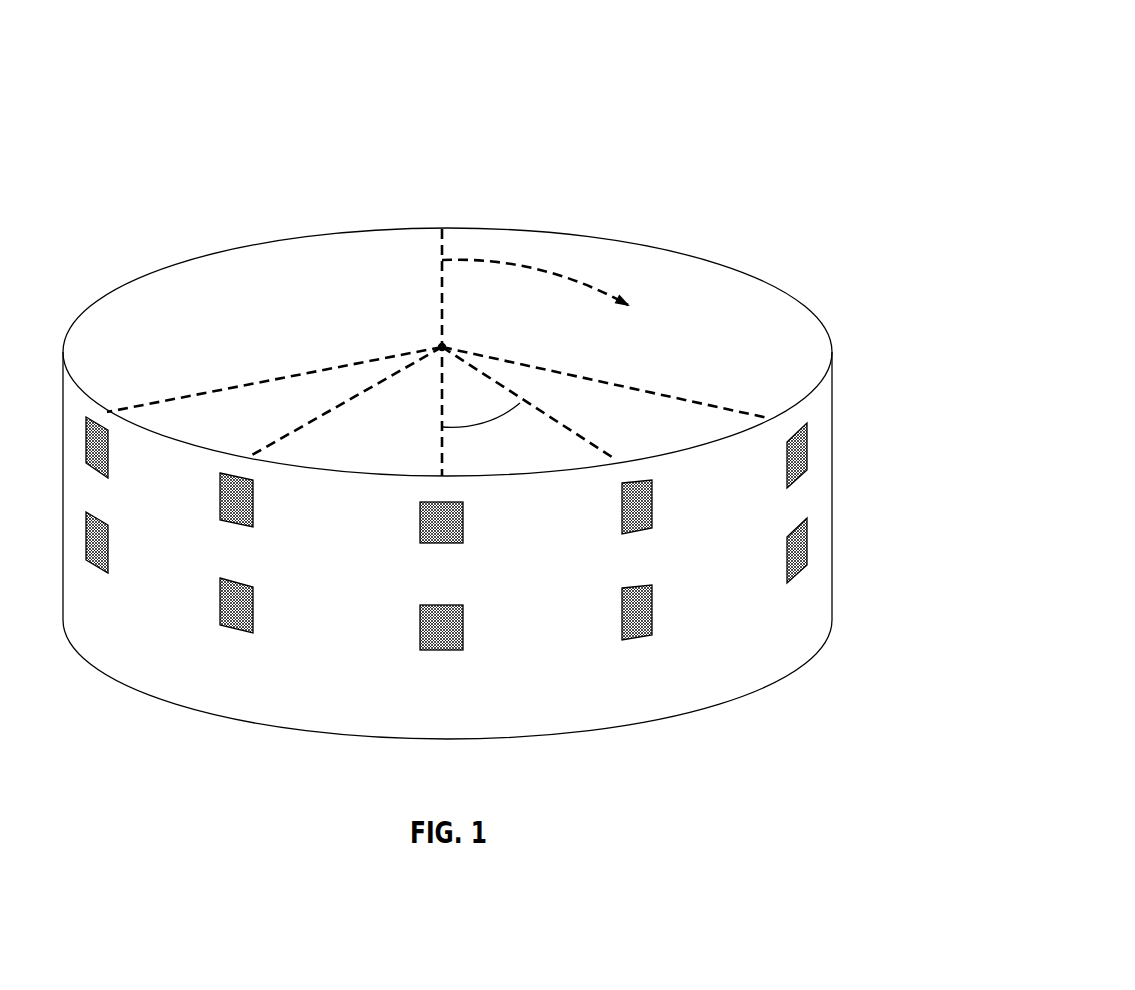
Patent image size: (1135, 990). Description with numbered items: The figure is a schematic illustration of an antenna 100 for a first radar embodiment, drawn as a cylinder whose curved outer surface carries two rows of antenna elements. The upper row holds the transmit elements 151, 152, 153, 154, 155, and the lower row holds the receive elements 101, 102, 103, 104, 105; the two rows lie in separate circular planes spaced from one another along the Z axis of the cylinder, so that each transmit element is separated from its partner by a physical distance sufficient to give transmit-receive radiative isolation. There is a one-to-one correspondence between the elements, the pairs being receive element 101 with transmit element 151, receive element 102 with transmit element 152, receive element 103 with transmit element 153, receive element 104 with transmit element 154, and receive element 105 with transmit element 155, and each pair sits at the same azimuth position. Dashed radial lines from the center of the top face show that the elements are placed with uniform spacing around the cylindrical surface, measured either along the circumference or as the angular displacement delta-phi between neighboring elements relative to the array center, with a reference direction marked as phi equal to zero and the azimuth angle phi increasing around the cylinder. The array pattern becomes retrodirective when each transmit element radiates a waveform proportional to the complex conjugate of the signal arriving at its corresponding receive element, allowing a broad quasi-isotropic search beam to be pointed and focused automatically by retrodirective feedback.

The antenna 100 is at (684, 204).
The receive element 101 is at (797, 553).
The receive element 102 is at (650, 615).
The receive element 103 is at (453, 637).
The receive element 104 is at (253, 618).
The receive element 105 is at (107, 557).
The transmit element 151 is at (797, 458).
The transmit element 152 is at (650, 515).
The transmit element 153 is at (460, 537).
The transmit element 154 is at (253, 497).
The transmit element 155 is at (108, 460).